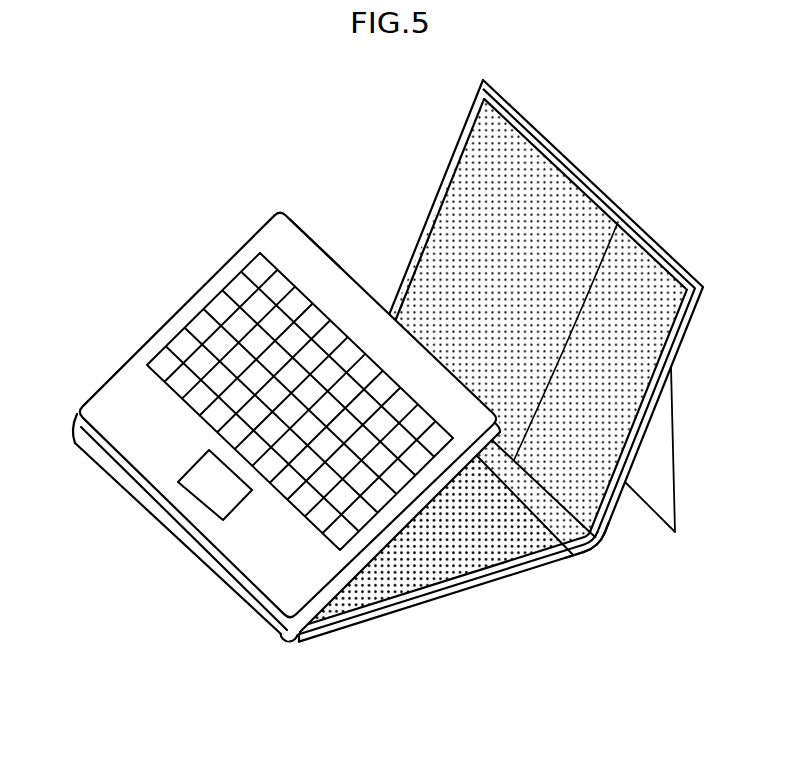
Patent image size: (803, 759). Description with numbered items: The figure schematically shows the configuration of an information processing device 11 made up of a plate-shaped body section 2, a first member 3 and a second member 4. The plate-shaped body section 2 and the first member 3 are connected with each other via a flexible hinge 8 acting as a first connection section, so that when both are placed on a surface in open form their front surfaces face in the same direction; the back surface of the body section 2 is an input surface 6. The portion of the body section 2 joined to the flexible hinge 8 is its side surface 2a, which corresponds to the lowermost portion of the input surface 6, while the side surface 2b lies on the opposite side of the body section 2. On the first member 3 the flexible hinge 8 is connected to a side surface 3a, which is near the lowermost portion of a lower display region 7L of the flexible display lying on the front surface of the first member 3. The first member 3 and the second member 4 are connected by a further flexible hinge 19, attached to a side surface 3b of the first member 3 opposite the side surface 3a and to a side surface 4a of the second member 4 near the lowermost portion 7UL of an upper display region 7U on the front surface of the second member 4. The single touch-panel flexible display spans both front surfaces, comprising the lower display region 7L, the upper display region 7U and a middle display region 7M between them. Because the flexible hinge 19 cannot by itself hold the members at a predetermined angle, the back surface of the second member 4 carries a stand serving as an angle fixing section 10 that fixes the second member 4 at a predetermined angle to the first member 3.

The information processing device 11 is at (372, 392).
The plate-shaped body section 2 is at (260, 410).
The side surface 2a is at (79, 423).
The side surface 2b is at (310, 237).
The input surface 6 is at (207, 330).
The flexible hinge 8 is at (182, 532).
The first member 3 is at (460, 618).
The side surface 3a is at (294, 645).
The side surface 3b is at (573, 556).
The second member 4 is at (542, 322).
The side surface 4a is at (598, 546).
The upper display region 7U is at (462, 195).
The middle display region 7M is at (545, 508).
The lower display region 7L is at (395, 572).
The lowermost portion 7UL is at (618, 222).
The angle fixing section 10 is at (676, 448).
The flexible hinge 19 is at (589, 554).